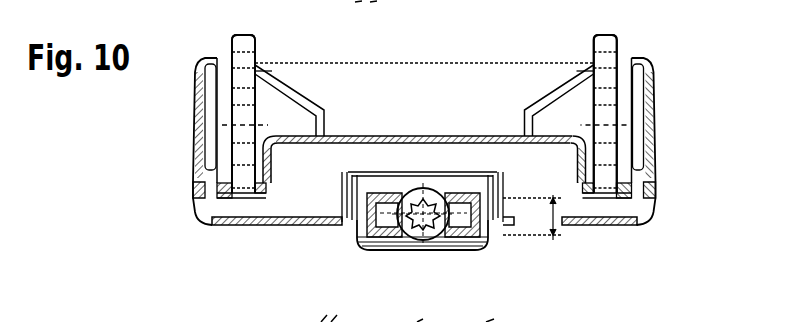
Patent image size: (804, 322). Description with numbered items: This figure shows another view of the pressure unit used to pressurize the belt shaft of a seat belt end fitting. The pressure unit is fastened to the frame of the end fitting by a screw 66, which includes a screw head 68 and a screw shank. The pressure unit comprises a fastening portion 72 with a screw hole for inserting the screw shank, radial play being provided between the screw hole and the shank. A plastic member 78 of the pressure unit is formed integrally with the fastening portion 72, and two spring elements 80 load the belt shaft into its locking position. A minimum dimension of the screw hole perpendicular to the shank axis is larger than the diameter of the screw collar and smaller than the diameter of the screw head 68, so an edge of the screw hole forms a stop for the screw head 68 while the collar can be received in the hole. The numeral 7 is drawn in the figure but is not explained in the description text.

The fastening assembly 7 is at (547, 36).
The screw 66 is at (443, 190).
The screw head 68 is at (430, 237).
The fastening portion 72 is at (400, 260).
The plastic member 78 is at (282, 208).
The spring elements 80 is at (230, 48).